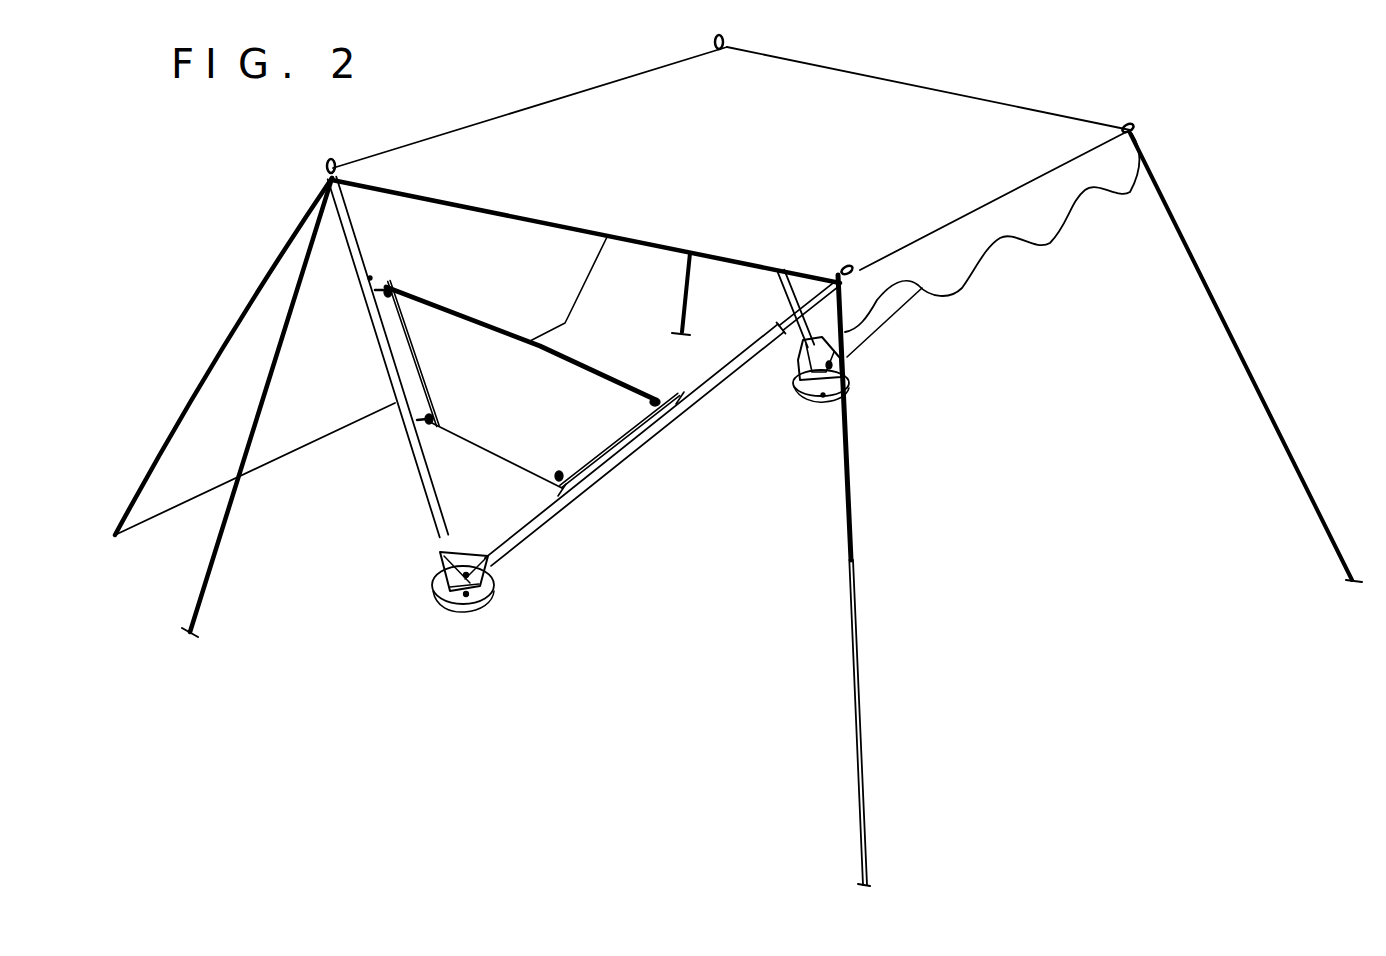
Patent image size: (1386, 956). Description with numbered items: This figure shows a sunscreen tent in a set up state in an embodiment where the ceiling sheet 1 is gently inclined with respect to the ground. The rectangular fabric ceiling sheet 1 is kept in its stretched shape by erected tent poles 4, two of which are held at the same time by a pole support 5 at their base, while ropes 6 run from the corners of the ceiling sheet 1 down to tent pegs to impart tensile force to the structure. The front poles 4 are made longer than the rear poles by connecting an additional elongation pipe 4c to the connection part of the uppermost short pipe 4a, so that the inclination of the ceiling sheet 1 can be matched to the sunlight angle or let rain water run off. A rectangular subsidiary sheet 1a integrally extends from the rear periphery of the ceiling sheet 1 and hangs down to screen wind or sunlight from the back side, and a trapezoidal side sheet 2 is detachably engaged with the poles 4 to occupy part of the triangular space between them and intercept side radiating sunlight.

The ceiling sheet 1 is at (880, 105).
The subsidiary sheet 1a is at (243, 350).
The side sheet 2 is at (508, 422).
The tent pole 4 is at (611, 470).
The uppermost short pipe 4a is at (727, 377).
The elongation pipe 4c is at (787, 332).
The pole support 5 is at (455, 606).
The rope 6 is at (858, 657).